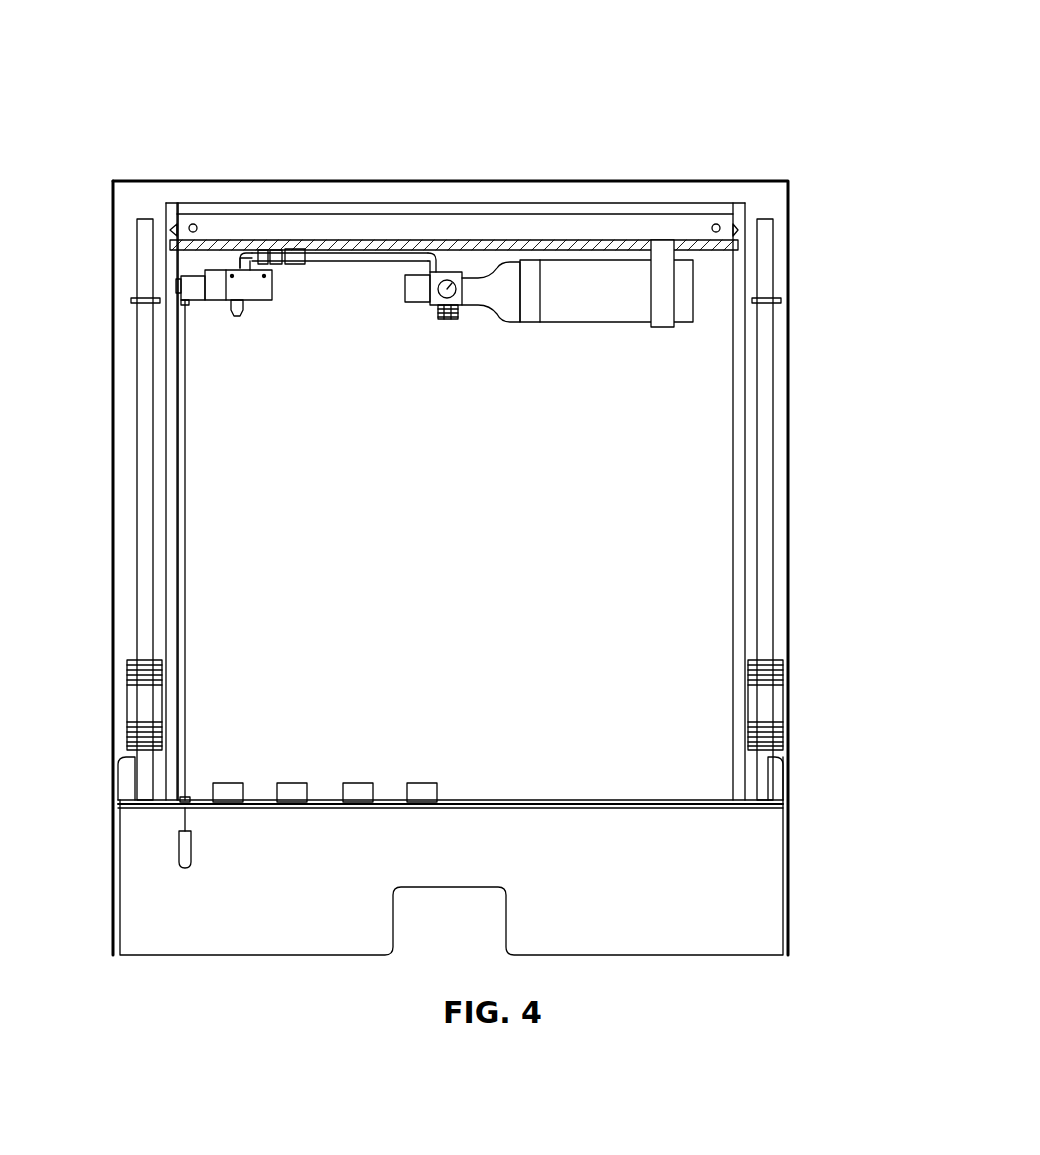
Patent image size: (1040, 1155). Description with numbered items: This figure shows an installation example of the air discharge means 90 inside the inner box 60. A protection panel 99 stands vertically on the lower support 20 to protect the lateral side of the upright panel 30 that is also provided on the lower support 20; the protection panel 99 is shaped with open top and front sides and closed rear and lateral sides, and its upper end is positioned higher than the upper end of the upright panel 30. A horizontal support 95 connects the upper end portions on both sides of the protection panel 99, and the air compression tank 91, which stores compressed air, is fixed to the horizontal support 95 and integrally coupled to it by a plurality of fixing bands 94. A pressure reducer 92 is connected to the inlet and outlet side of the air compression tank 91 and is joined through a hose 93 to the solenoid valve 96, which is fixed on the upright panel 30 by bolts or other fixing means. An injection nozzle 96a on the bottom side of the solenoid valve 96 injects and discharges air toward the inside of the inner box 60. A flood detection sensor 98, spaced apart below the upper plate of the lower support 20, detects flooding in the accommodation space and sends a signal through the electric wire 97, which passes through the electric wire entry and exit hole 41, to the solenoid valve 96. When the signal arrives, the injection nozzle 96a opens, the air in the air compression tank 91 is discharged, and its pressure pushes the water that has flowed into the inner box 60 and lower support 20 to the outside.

The lower support 20 is at (788, 884).
The upright panel 30 is at (512, 225).
The electric wire entry and exit hole 41 is at (425, 790).
The inner box 60 is at (790, 258).
The air discharge means 90 is at (418, 426).
The air compression tank 91 is at (600, 275).
The pressure reducer 92 is at (462, 272).
The hose 93 is at (360, 258).
The fixing bands 94 is at (663, 318).
The horizontal support 95 is at (708, 235).
The solenoid valve 96 is at (286, 292).
The injection nozzle 96a is at (237, 316).
The electric wire 97 is at (185, 467).
The flood detection sensor 98 is at (185, 852).
The protection panel 99 is at (137, 217).